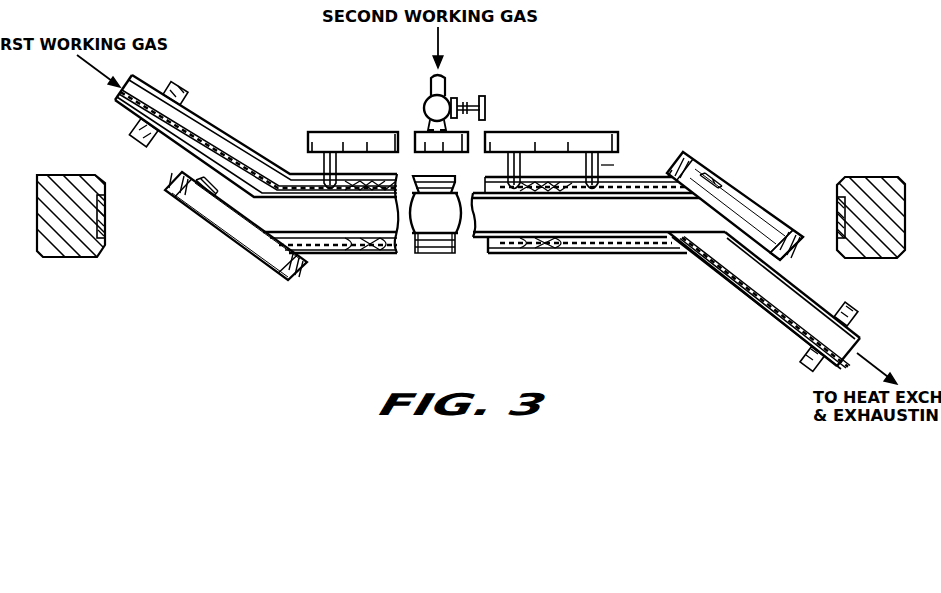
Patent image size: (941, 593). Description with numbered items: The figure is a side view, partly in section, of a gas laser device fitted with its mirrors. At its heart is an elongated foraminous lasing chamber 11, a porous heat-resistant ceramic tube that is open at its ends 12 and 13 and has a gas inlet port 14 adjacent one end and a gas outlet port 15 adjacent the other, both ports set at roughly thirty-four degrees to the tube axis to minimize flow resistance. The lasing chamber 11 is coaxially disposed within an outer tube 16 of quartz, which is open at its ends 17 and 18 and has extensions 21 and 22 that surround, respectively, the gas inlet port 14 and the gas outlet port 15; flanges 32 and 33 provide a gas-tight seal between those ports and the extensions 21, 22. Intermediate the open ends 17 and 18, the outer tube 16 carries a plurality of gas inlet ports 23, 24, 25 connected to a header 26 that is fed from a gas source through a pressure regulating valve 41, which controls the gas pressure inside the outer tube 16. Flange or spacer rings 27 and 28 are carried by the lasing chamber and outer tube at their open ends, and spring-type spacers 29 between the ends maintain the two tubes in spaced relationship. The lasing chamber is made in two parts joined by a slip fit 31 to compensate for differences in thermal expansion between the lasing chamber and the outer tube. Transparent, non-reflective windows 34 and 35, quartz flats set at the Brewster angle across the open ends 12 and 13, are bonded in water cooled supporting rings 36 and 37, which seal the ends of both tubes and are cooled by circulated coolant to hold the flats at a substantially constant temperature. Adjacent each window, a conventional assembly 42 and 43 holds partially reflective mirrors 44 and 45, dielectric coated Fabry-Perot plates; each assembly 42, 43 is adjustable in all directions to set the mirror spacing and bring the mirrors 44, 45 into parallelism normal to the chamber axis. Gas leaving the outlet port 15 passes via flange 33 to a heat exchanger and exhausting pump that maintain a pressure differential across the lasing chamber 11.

The lasing chamber 11 is at (438, 223).
The open end of lasing chamber 12 is at (289, 218).
The open end of lasing chamber 13 is at (687, 230).
The gas inlet port 14 is at (208, 117).
The gas outlet port 15 is at (735, 292).
The outer tube 16 is at (518, 255).
The open end of outer tube 17 is at (318, 241).
The open end of outer tube 18 is at (656, 186).
The extension 21 is at (245, 142).
The extension 22 is at (700, 274).
The gas inlet port 23 is at (338, 163).
The gas inlet port 24 is at (508, 166).
The gas inlet port 25 is at (612, 170).
The header 26 is at (550, 131).
The flange or spacer ring 27 is at (206, 189).
The flange or spacer ring 28 is at (712, 181).
The spring-type spacer 29 is at (388, 252).
The slip fit 31 is at (436, 180).
The flange 32 is at (172, 93).
The flange 33 is at (858, 302).
The window 34 is at (252, 252).
The window 35 is at (795, 232).
The water cooled supporting ring 36 is at (226, 224).
The water cooled supporting ring 37 is at (698, 186).
The pressure regulating valve 41 is at (429, 107).
The mirror assembly 42 is at (66, 222).
The mirror assembly 43 is at (882, 225).
The partially reflective mirror 44 is at (101, 222).
The partially reflective mirror 45 is at (838, 215).